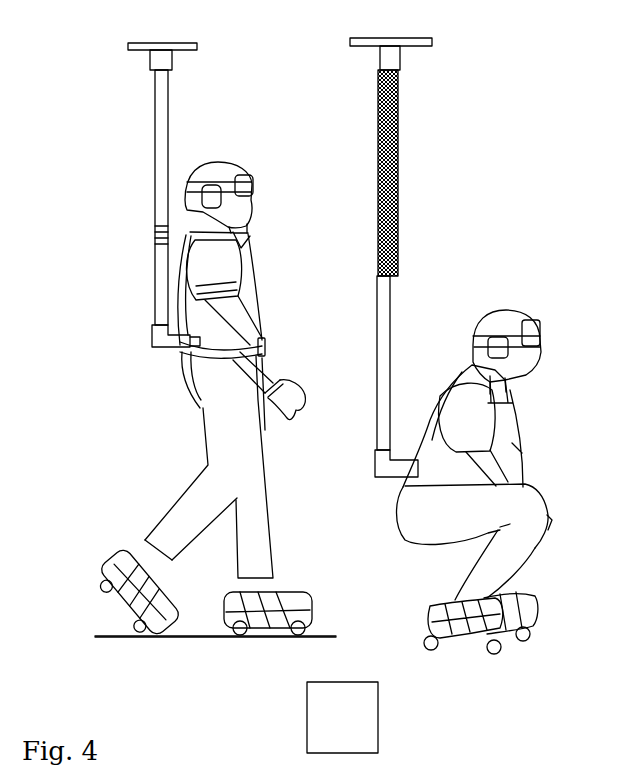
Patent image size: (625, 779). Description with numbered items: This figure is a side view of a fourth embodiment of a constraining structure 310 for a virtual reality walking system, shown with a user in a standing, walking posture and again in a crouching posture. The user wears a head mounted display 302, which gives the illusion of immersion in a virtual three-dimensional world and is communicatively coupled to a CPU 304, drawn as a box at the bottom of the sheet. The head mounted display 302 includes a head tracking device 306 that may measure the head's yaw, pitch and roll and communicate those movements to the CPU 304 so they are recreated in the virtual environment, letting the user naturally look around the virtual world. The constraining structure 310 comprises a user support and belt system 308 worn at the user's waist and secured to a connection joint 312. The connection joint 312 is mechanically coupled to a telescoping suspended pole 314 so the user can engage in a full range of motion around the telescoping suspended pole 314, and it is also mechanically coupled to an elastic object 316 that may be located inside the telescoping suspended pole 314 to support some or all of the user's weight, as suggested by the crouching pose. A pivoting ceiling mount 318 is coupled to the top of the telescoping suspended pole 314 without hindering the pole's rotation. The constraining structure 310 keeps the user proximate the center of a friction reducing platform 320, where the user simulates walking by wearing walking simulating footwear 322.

The head mounted display 302 is at (258, 180).
The CPU 304 is at (342, 717).
The head tracking device 306 is at (190, 172).
The user support and belt system 308 is at (275, 345).
The constraining structure 310 is at (280, 29).
The connection joint 312 is at (165, 347).
The telescoping suspended pole 314 is at (380, 79).
The elastic object 316 is at (380, 119).
The pivoting ceiling mount 318 is at (380, 61).
The friction reducing platform 320 is at (107, 635).
The walking simulating footwear 322 is at (226, 636).